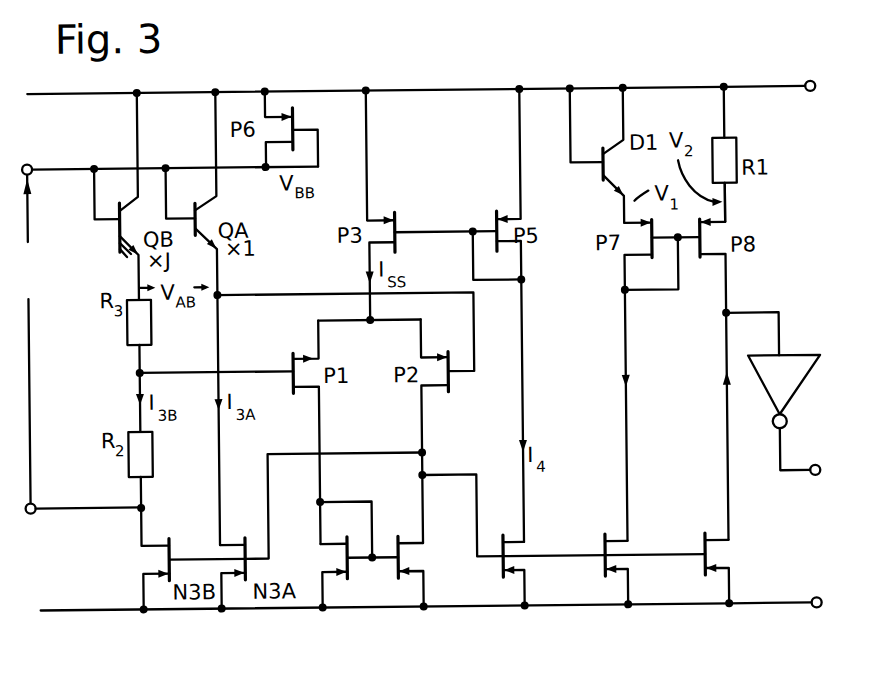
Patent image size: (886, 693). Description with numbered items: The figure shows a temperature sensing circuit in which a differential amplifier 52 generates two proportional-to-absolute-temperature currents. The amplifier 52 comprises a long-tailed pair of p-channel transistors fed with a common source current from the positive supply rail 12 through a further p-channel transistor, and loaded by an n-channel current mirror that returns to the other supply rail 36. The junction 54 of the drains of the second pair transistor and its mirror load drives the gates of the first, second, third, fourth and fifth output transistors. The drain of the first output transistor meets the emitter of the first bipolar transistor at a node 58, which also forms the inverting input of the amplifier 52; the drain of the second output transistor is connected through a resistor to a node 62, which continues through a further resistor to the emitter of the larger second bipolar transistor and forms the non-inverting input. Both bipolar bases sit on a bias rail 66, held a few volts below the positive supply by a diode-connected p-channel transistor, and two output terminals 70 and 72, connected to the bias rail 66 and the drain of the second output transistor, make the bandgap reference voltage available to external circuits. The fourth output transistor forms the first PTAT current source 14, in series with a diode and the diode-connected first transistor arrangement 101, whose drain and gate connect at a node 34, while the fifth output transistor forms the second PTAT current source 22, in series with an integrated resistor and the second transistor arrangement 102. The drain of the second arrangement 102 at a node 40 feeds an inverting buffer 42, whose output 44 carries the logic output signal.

The positive supply rail 12 is at (752, 88).
The first PTAT current source 14 is at (606, 596).
The second PTAT current source 22 is at (709, 597).
The node connecting drain and gate of transistor P7 to first PTAT current source 34 is at (626, 350).
The other supply rail 36 is at (782, 602).
The node at drain of transistor P8 40 is at (731, 298).
The inverting buffer 42 is at (814, 361).
The output of the inverter 44 is at (781, 462).
The differential amplifier 52 is at (524, 625).
The junction of the drains of transistors P2 and N2 54 is at (424, 438).
The node at emitter of transistor QA and drain of N3A 58 is at (218, 293).
The node at junction of resistors R2 and R3 62 is at (139, 370).
The bias rail 66 is at (194, 164).
The output terminal 70 is at (61, 163).
The output terminal 72 is at (30, 509).
The first transistor arrangement 101 is at (618, 267).
The second transistor arrangement 102 is at (745, 221).